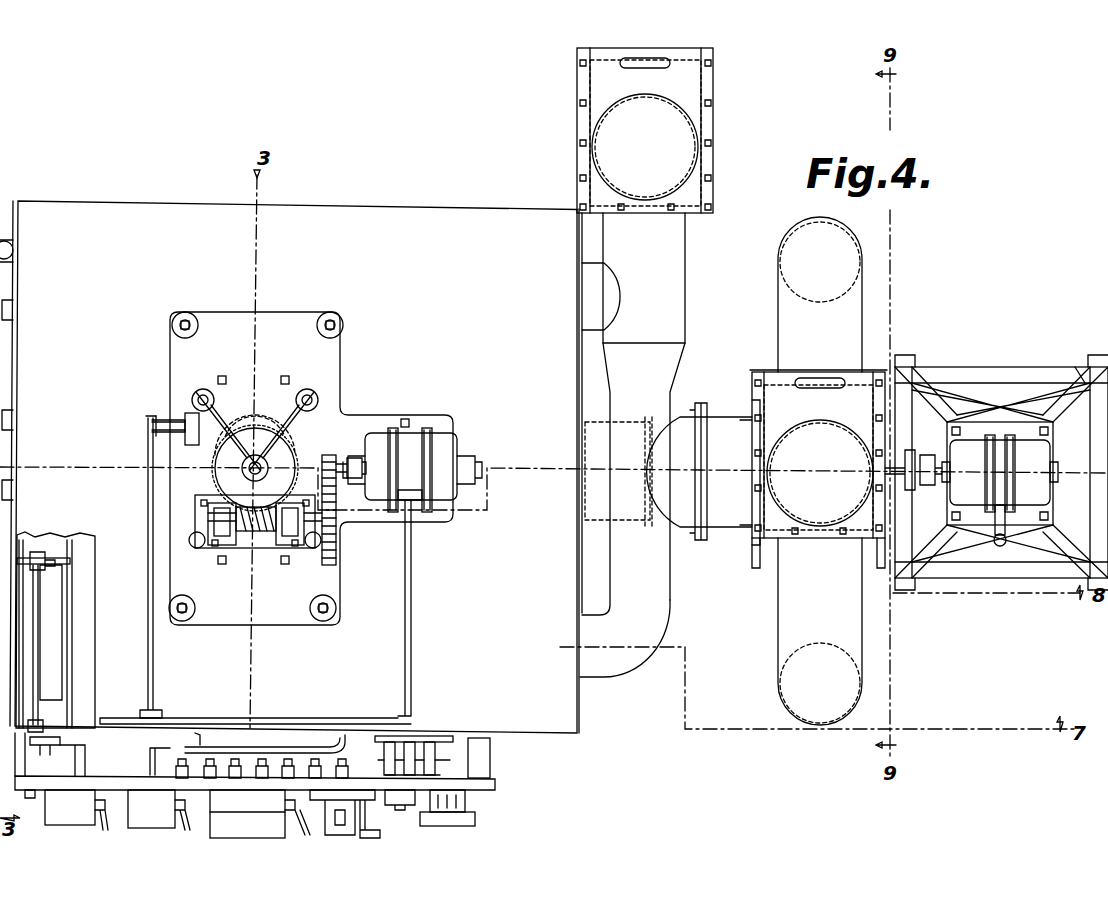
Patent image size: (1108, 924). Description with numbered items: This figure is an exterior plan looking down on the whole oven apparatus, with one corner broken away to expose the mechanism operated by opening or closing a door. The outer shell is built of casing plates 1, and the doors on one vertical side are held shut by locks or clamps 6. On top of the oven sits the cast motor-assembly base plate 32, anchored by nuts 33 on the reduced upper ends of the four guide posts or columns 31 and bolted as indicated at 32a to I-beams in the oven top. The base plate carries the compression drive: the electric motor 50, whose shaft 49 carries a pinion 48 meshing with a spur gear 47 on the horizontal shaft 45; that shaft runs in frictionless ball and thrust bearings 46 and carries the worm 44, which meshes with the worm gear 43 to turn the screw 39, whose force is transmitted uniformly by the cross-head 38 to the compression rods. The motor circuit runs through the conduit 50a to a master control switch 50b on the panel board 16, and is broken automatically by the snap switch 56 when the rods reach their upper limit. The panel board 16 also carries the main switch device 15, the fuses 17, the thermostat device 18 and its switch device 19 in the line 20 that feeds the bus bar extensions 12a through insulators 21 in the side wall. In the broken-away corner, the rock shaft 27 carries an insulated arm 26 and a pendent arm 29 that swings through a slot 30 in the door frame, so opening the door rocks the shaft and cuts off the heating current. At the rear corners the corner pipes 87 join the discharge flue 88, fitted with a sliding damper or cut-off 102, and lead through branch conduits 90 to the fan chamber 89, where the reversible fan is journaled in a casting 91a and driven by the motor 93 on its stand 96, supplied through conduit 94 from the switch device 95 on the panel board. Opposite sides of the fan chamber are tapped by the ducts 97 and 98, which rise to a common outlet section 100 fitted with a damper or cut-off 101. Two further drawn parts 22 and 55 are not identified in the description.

The casing plates 1 is at (289, 467).
The locks or clamps 6 is at (186, 432).
The bus bar extensions 12a is at (430, 742).
The main switch device 15 is at (260, 814).
The panel board 16 is at (112, 790).
The fuses 17 is at (288, 780).
The thermostat device 18 is at (478, 819).
The switch device 19 is at (362, 815).
The line 20 is at (190, 752).
The insulators 21 is at (452, 736).
The box 22 is at (492, 757).
The arm 26 is at (60, 740).
The rock shaft 27 is at (42, 593).
The pendent arm 29 is at (55, 568).
The slot 30 is at (50, 560).
The guide posts or columns 31 is at (175, 333).
The base plate 32 is at (258, 640).
The bolts 32a is at (282, 376).
The nuts 33 is at (190, 322).
The cross-head 38 is at (280, 430).
The screw 39 is at (225, 467).
The worm gear 43 is at (255, 463).
The worm 44 is at (256, 532).
The horizontal shaft 45 is at (205, 500).
The ball and thrust bearings 46 is at (212, 545).
The spur gear 47 is at (336, 535).
The pinion 48 is at (328, 455).
The motor shaft 49 is at (343, 460).
The electric motor 50 is at (410, 448).
The conduit 50a is at (148, 485).
The master control switch 50b is at (55, 812).
The spring 55 is at (400, 806).
The snap switch 56 is at (185, 420).
The corner pipes 87 is at (592, 298).
The discharge flue 88 is at (670, 408).
The fan chamber 89 is at (766, 513).
The branch conduits 90 is at (668, 472).
The casting 91a is at (745, 380).
The motor 93 is at (1001, 472).
The conduit 94 is at (1003, 545).
The switch device 95 is at (150, 812).
The stand 96 is at (1060, 388).
The duct 97 is at (820, 631).
The duct 98 is at (820, 294).
The common outlet section 100 is at (818, 535).
The damper or cut-off 101 is at (852, 366).
The damper or cut-off 102 is at (698, 92).